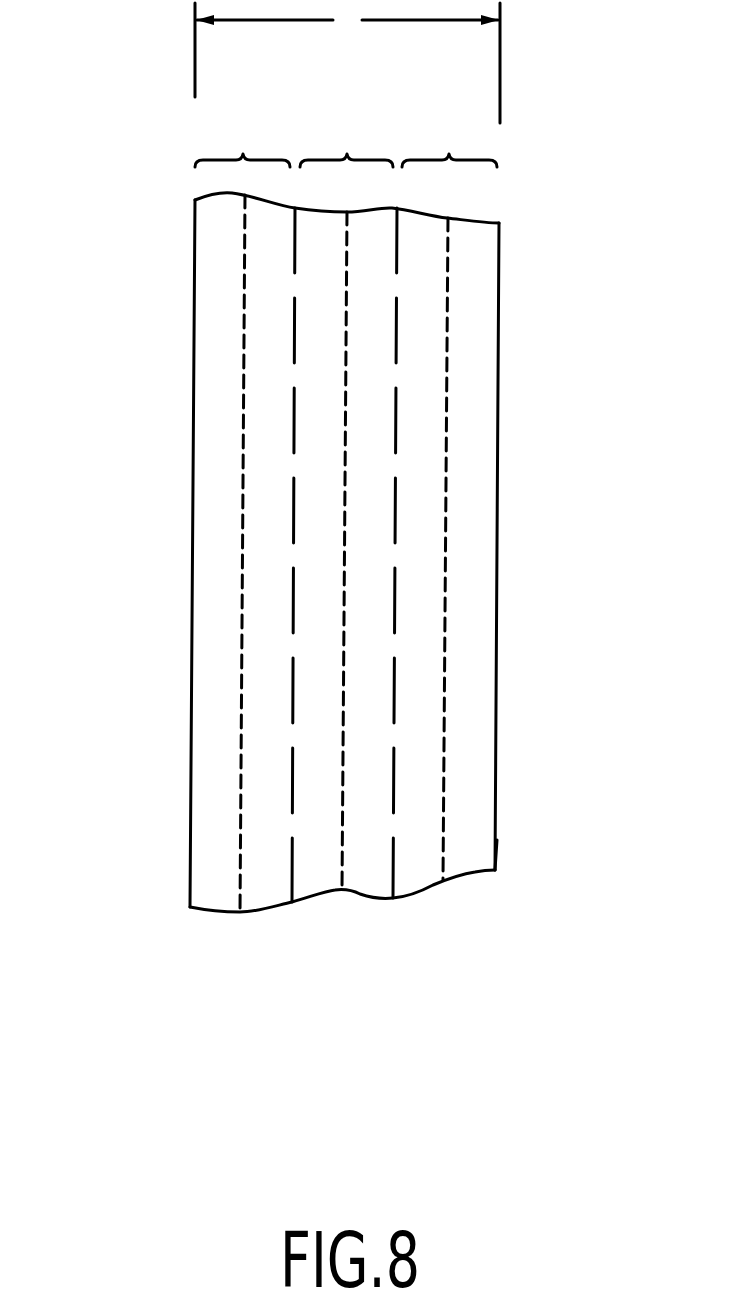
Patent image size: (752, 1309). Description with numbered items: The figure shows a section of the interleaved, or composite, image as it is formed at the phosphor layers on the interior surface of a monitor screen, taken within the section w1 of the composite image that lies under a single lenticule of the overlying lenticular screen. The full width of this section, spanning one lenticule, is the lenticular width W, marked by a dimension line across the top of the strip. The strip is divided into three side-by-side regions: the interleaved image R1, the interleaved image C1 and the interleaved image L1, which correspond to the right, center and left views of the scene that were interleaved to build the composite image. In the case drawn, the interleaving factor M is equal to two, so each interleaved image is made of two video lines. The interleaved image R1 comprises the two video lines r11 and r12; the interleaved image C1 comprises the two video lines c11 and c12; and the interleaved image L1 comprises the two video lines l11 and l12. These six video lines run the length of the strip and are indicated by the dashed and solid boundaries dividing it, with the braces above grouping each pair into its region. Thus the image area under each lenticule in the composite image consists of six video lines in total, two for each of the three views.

The lenticular width W is at (347, 63).
The section of the composite image w1 is at (517, 545).
The interleaved image R1 is at (242, 129).
The interleaved image C1 is at (346, 129).
The interleaved image L1 is at (449, 129).
The video line r11 is at (268, 892).
The video line r12 is at (213, 892).
The video line c11 is at (370, 878).
The video line c12 is at (322, 878).
The video line l11 is at (470, 857).
The video line l12 is at (417, 868).